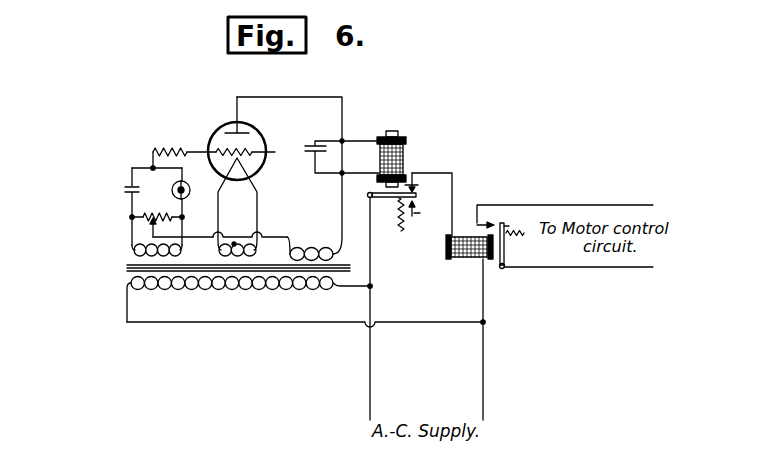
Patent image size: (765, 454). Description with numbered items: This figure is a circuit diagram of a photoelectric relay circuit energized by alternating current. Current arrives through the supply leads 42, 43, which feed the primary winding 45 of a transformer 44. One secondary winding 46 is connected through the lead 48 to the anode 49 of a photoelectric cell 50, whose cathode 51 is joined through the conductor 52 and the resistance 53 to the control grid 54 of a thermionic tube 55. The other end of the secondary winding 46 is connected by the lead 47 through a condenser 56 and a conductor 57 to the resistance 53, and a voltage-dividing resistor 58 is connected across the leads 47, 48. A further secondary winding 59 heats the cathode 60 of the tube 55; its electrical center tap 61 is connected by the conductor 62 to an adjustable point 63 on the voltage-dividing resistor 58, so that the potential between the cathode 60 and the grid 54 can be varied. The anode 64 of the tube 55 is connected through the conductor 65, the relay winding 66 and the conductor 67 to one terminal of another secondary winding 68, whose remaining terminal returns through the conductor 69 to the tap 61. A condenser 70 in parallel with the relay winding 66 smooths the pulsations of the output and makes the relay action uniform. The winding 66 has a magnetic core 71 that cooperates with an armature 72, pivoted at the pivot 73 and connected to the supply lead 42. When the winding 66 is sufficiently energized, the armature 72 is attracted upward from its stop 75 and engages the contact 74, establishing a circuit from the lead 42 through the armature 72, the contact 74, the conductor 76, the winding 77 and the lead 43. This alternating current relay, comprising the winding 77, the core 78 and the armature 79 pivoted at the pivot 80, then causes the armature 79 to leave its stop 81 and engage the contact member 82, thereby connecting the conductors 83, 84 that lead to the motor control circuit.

The supply lead 42 is at (372, 262).
The supply lead 43 is at (486, 365).
The transformer 44 is at (102, 272).
The primary winding 45 is at (232, 292).
The secondary winding 46 is at (131, 248).
The lead 47 is at (127, 210).
The lead 48 is at (186, 235).
The anode 49 is at (192, 208).
The photoelectric cell 50 is at (190, 192).
The cathode 51 is at (183, 174).
The conductor 52 is at (168, 178).
The resistance 53 is at (166, 146).
The control grid 54 is at (240, 150).
The thermionic tube 55 is at (255, 138).
The condenser 56 is at (128, 186).
The conductor 57 is at (138, 164).
The voltage-dividing resistor 58 is at (128, 224).
The secondary winding 59 is at (250, 248).
The cathode 60 is at (259, 174).
The tap 61 is at (235, 244).
The conductor 62 is at (172, 253).
The adjustable point 63 is at (131, 237).
The anode 64 is at (232, 122).
The conductor 65 is at (306, 97).
The relay winding 66 is at (405, 153).
The conductor 67 is at (341, 186).
The secondary winding 68 is at (311, 239).
The conductor 69 is at (275, 243).
The condenser 70 is at (308, 146).
The core 71 is at (393, 131).
The armature 72 is at (390, 215).
The pivot 73 is at (368, 197).
The contact 74 is at (418, 184).
The stop 75 is at (426, 213).
The conductor 76 is at (454, 193).
The winding 77 is at (468, 261).
The core 78 is at (445, 250).
The armature 79 is at (506, 245).
The pivot 80 is at (504, 268).
The stop 81 is at (515, 225).
The contact member 82 is at (492, 220).
The conductor 83 is at (609, 205).
The conductor 84 is at (645, 268).